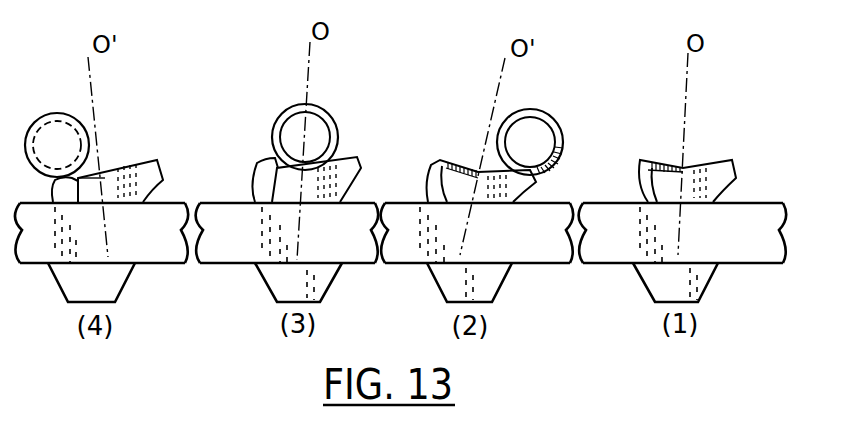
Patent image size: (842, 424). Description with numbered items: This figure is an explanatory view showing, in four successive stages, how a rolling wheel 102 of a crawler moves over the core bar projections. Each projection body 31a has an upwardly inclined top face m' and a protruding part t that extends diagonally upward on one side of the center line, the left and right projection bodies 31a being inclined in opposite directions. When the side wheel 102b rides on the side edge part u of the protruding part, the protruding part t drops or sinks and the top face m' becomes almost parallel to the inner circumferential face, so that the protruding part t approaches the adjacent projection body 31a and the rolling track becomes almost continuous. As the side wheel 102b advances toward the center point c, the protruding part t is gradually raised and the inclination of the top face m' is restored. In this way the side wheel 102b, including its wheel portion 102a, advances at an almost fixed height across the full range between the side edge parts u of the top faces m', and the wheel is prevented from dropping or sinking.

The rolling wheel 102 is at (57, 137).
The roller outer ring 102a is at (535, 110).
The side wheel 102b is at (313, 130).
The projection body 31a is at (728, 182).
The center point c is at (105, 176).
The side edge part u is at (443, 160).
The protruding part t is at (732, 164).
The top face m is at (698, 160).